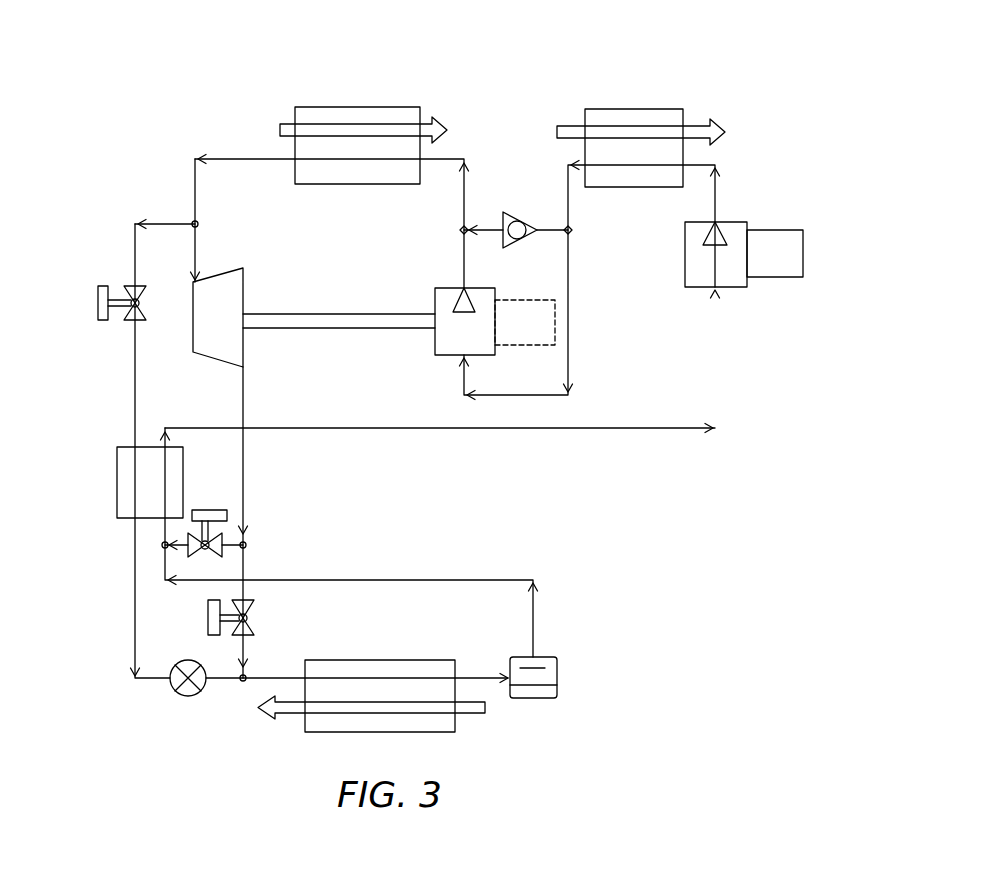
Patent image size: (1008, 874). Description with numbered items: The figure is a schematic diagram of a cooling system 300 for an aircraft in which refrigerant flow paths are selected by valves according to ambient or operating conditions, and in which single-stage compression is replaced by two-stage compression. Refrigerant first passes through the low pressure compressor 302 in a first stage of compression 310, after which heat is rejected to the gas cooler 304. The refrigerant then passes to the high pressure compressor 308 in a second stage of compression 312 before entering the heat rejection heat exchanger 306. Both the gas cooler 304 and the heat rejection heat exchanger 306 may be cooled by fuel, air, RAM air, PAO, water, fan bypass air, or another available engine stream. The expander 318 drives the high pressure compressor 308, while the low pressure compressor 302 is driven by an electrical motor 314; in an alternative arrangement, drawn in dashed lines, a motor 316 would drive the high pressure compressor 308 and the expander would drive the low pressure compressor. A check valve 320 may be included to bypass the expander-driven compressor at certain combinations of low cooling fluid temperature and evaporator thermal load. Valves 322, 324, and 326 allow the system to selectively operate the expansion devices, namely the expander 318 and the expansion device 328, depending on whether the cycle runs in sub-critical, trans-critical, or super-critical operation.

The cooling system 300 is at (814, 138).
The low pressure compressor 302 is at (735, 290).
The gas cooler 304 is at (665, 108).
The heat rejection heat exchanger 306 is at (403, 107).
The high pressure compressor 308 is at (450, 357).
The first stage of compression 310 is at (650, 390).
The second stage of compression 312 is at (410, 372).
The motor 314 is at (787, 277).
The motor 316 is at (555, 340).
The expander 318 is at (245, 283).
The check valve 320 is at (510, 245).
The valve 322 is at (103, 320).
The valve 324 is at (210, 510).
The valve 326 is at (208, 618).
The expansion device 328 is at (188, 696).